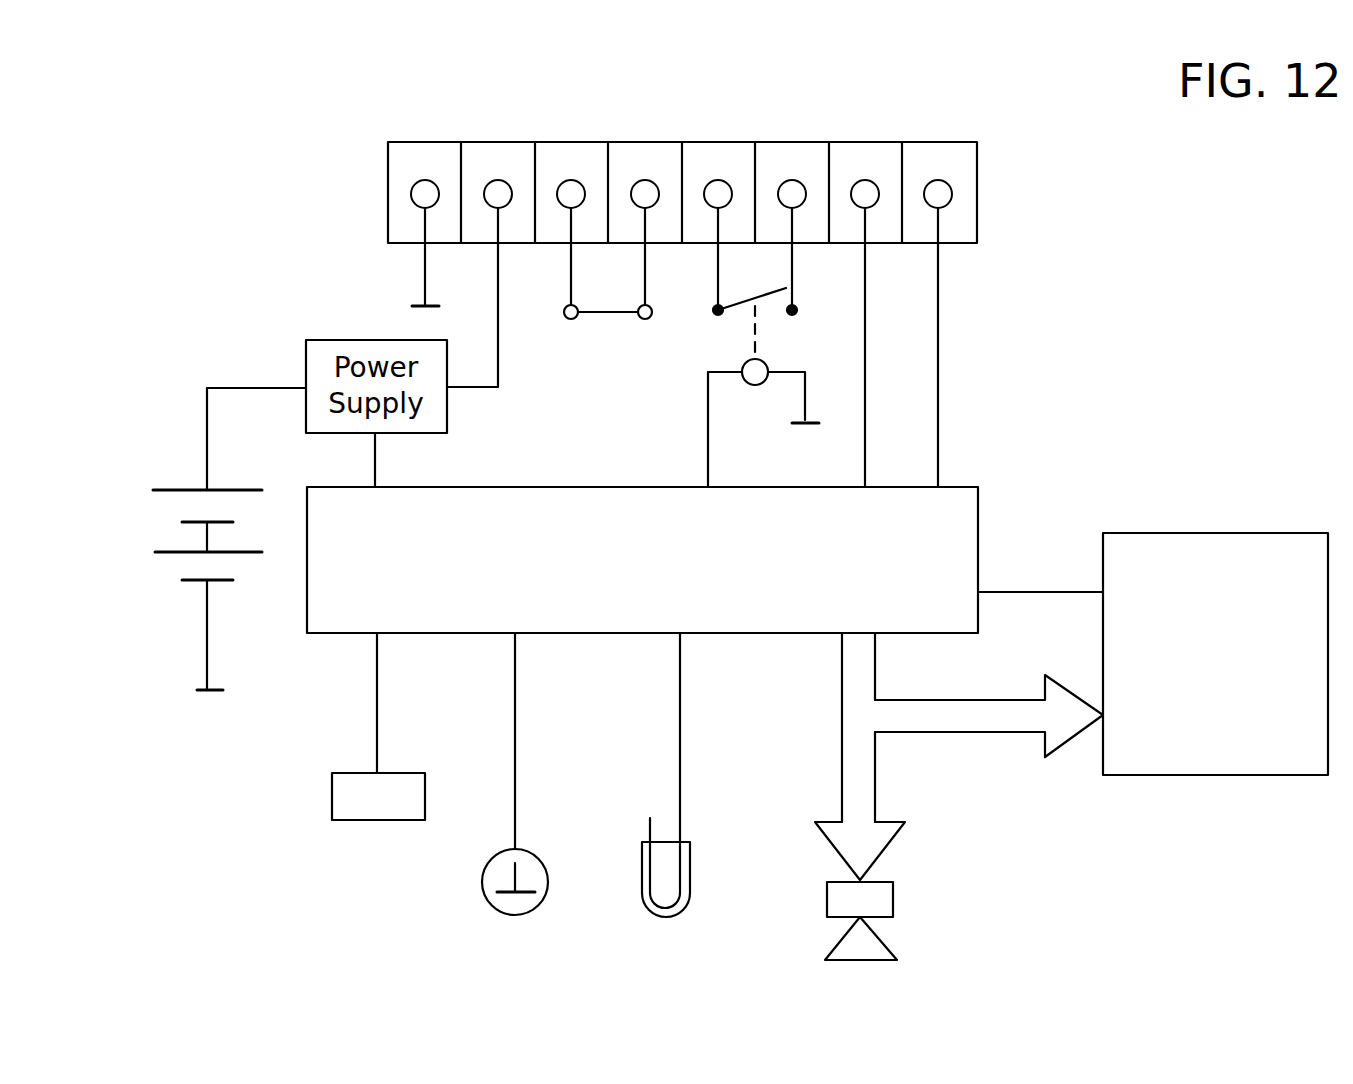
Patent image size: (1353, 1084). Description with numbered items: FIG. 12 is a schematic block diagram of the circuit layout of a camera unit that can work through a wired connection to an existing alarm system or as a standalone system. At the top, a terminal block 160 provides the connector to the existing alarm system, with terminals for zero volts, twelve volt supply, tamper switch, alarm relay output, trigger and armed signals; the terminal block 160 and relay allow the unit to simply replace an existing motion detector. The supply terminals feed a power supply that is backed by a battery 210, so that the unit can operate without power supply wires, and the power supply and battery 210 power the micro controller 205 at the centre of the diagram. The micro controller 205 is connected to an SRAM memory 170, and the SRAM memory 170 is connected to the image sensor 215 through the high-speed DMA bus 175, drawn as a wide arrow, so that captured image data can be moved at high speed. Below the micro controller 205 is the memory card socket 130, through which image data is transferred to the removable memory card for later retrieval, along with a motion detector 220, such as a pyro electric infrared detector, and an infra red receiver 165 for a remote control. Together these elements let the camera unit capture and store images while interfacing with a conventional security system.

The terminal block 160 is at (387, 197).
The battery 210 is at (168, 534).
The micro controller 205 is at (933, 613).
The SRAM memory 170 is at (1311, 760).
The high-speed DMA bus 175 is at (890, 713).
The image sensor 215 is at (893, 897).
The memory card socket 130 is at (332, 795).
The motion detector 220 is at (547, 870).
The infra red receiver 165 is at (690, 867).